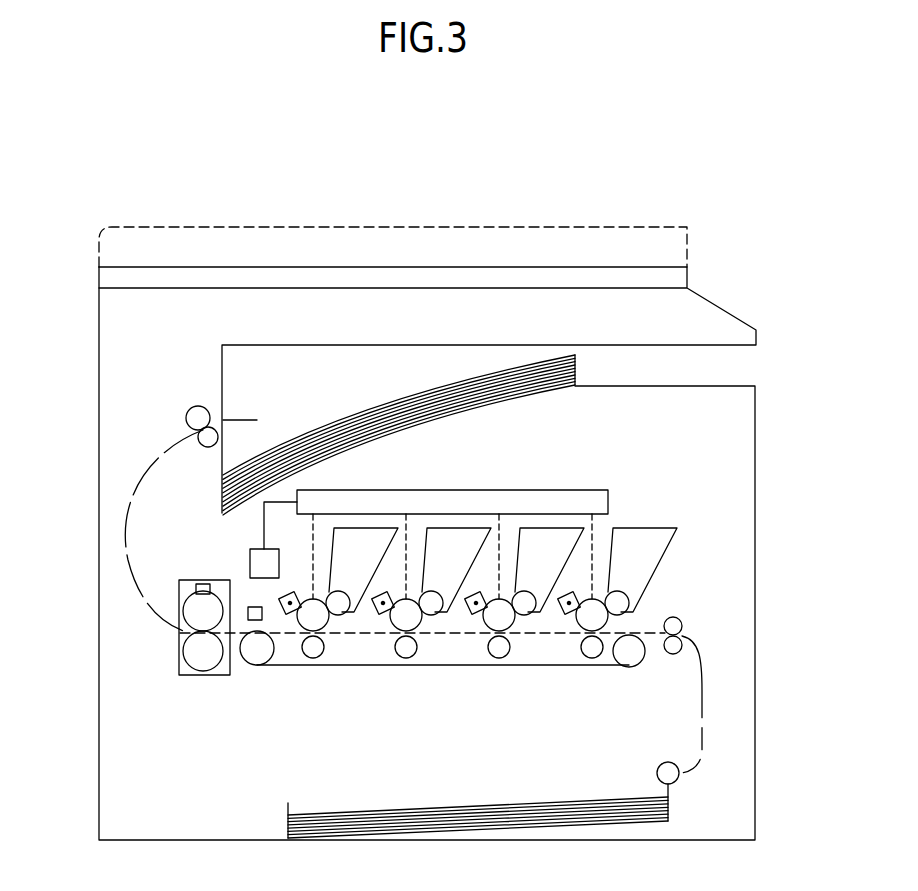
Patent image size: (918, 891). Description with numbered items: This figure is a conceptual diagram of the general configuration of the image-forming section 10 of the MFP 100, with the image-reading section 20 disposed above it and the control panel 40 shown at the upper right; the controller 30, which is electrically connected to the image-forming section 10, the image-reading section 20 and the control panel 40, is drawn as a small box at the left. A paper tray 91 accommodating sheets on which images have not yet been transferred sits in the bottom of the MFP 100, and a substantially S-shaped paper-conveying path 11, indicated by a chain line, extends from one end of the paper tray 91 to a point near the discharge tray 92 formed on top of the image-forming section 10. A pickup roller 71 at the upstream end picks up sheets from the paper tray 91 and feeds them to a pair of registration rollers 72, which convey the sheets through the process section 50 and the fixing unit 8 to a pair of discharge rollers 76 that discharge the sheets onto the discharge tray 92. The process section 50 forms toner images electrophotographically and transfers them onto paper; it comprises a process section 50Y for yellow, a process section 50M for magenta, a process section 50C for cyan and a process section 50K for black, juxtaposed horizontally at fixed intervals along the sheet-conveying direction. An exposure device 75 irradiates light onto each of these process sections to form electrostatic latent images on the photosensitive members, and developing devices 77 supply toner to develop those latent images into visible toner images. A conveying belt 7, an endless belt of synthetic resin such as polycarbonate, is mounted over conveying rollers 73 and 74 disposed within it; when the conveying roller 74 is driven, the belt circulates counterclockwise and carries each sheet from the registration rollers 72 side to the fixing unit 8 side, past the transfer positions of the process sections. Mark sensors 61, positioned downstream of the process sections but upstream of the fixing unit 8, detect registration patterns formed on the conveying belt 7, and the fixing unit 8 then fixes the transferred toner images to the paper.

The MFP 100 is at (617, 194).
The image-forming section 10 is at (716, 439).
The image-reading section 20 is at (198, 227).
The control panel 40 is at (731, 308).
The discharge tray 92 is at (392, 427).
The discharge rollers 76 is at (198, 407).
The exposure device 75 is at (557, 488).
The developing devices 77 is at (363, 523).
The controller 30 is at (250, 555).
The mark sensors 61 is at (252, 607).
The fixing unit 8 is at (203, 676).
The conveying roller 74 is at (255, 658).
The conveying belt 7 is at (287, 667).
The process section 50Y is at (338, 672).
The process section 50M is at (426, 672).
The process section 50C is at (518, 672).
The process section 50K is at (606, 672).
The process section 50 is at (297, 733).
The registration rollers 72 is at (676, 618).
The conveying roller 73 is at (632, 658).
The paper-conveying path 11 is at (712, 682).
The pickup roller 71 is at (660, 772).
The paper tray 91 is at (508, 817).